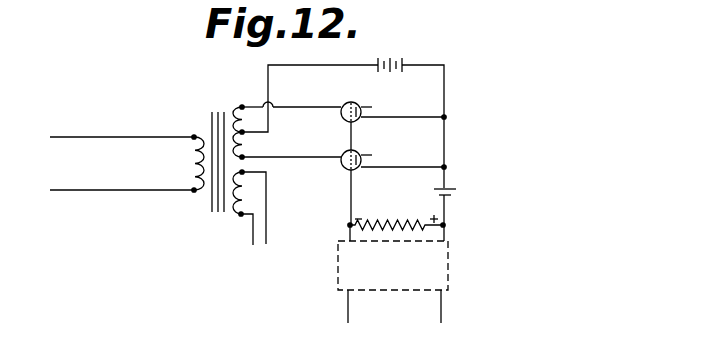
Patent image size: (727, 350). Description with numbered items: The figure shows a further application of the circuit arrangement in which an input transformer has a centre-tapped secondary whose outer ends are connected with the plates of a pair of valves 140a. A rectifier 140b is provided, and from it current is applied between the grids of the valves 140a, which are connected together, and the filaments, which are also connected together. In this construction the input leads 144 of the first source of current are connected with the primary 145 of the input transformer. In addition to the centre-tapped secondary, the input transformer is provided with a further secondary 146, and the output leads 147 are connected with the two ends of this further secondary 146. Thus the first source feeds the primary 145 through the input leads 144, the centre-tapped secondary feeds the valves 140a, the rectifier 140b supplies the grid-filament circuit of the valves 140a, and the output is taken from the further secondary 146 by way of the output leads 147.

The input leads 144 is at (108, 137).
The primary 145 is at (203, 133).
The further secondary 146 is at (229, 215).
The output leads 147 is at (257, 224).
The valves 140a is at (357, 121).
The rectifier 140b is at (450, 266).